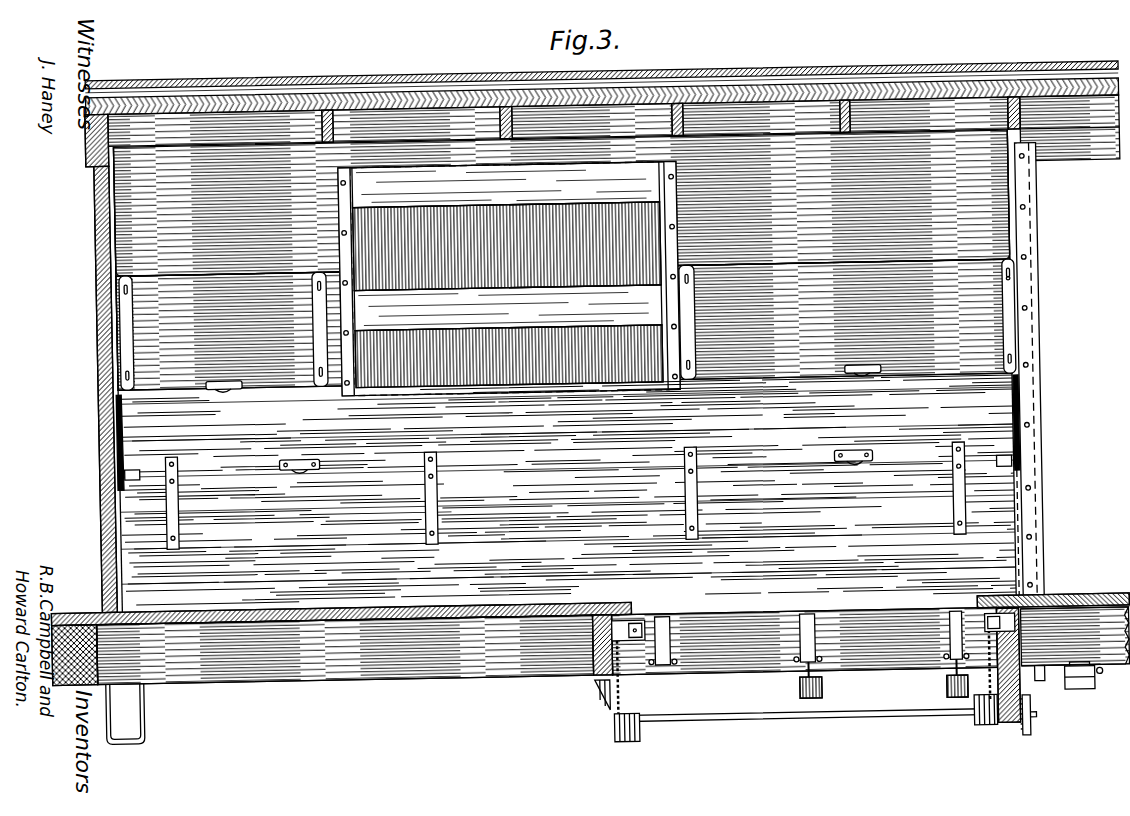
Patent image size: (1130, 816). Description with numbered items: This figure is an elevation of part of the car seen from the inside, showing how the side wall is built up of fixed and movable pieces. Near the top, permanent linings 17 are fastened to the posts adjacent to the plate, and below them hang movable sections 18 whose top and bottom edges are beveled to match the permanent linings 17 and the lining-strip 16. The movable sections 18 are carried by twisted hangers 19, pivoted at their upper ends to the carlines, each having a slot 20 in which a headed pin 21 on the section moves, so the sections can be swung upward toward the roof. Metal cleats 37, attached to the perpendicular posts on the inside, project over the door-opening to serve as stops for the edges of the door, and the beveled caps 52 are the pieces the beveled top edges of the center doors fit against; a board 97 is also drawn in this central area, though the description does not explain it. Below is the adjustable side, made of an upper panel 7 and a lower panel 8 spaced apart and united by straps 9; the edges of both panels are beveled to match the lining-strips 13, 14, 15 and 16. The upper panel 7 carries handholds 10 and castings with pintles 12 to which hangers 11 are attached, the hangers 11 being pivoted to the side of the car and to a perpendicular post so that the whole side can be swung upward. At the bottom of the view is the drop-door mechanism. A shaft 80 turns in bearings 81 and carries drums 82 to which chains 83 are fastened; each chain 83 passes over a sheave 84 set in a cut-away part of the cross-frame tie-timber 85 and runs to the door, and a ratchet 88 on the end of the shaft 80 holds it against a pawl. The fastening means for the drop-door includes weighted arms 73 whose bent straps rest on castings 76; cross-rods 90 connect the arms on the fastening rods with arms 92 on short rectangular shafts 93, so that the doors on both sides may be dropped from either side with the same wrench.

The upper panel 7 is at (567, 465).
The panel 8 is at (568, 533).
The straps 9 is at (684, 497).
The handholds 10 is at (298, 454).
The hangers 11 is at (1028, 447).
The pintles 12 is at (1012, 473).
The lining-strip 13 is at (926, 577).
The lining-strip 14 is at (926, 501).
The lining-strip 15 is at (875, 434).
The lining-strip 16 is at (850, 398).
The permanent linings 17 is at (561, 203).
The movable sections 18 is at (564, 324).
The twisted hangers 19 is at (1006, 333).
The slots 20 is at (1012, 285).
The headed pins 21 is at (312, 297).
The metal cleats 37 is at (1054, 199).
The beveled caps 52 is at (508, 295).
The weighted arms 73 is at (818, 694).
The castings 76 is at (796, 676).
The shaft 80 is at (708, 724).
The bearings 81 is at (600, 706).
The drums 82 is at (806, 727).
The chains 83 is at (615, 694).
The sheave 84 is at (632, 622).
The cross-frame tie-timber 85 is at (1032, 604).
The ratchet 88 is at (1024, 738).
The cross-rods 90 is at (1040, 686).
The arms 92 is at (1095, 684).
The short rectangular shafts 93 is at (1074, 698).
The ventilator board 97 is at (507, 246).